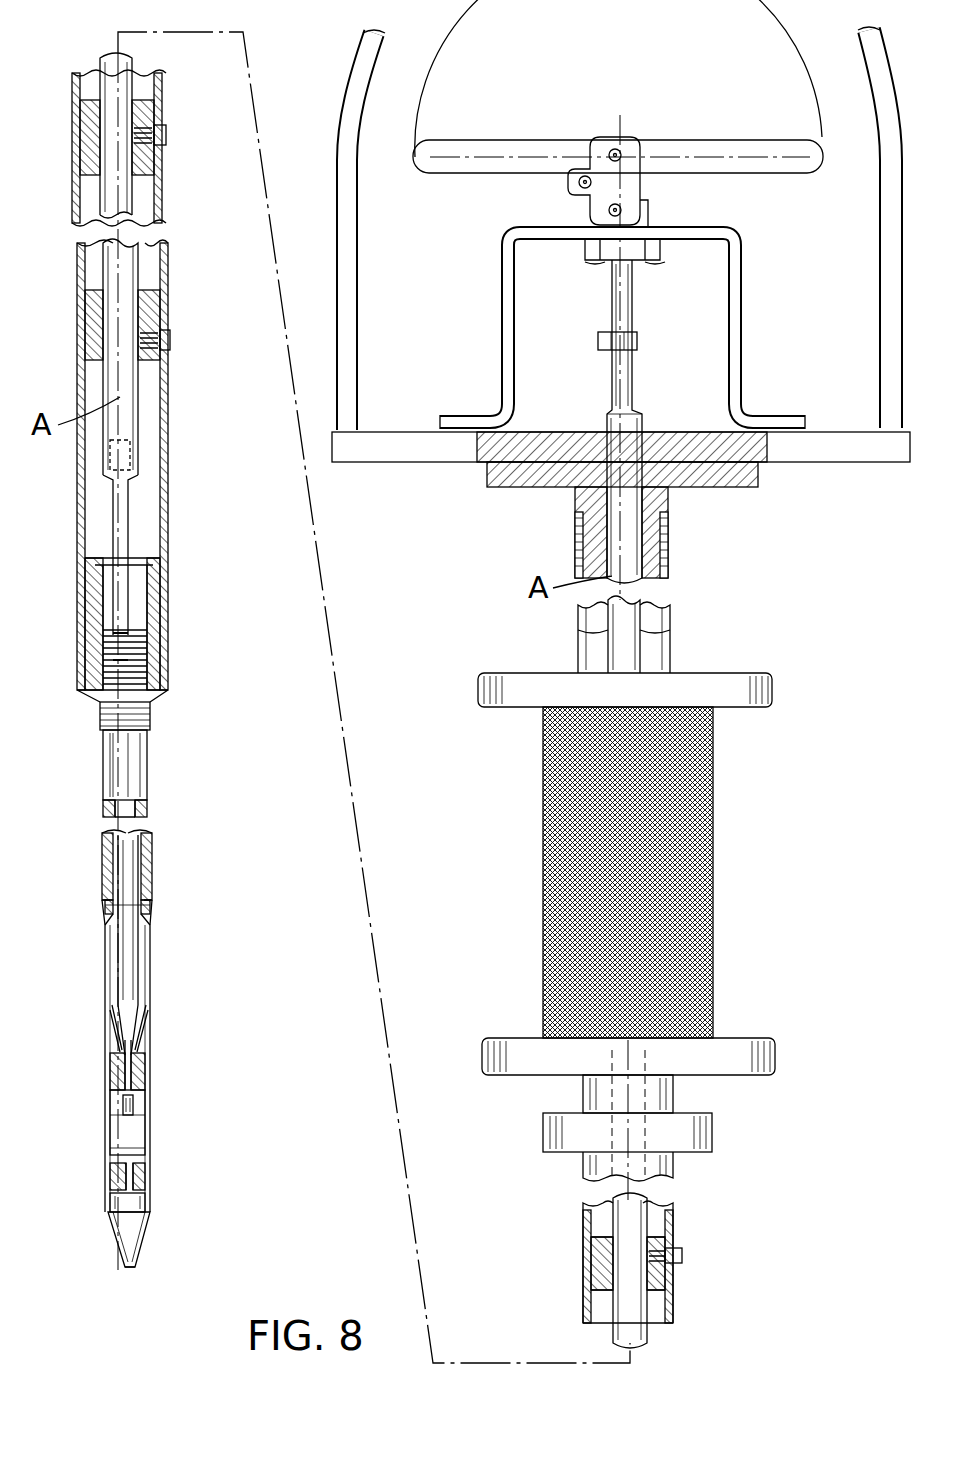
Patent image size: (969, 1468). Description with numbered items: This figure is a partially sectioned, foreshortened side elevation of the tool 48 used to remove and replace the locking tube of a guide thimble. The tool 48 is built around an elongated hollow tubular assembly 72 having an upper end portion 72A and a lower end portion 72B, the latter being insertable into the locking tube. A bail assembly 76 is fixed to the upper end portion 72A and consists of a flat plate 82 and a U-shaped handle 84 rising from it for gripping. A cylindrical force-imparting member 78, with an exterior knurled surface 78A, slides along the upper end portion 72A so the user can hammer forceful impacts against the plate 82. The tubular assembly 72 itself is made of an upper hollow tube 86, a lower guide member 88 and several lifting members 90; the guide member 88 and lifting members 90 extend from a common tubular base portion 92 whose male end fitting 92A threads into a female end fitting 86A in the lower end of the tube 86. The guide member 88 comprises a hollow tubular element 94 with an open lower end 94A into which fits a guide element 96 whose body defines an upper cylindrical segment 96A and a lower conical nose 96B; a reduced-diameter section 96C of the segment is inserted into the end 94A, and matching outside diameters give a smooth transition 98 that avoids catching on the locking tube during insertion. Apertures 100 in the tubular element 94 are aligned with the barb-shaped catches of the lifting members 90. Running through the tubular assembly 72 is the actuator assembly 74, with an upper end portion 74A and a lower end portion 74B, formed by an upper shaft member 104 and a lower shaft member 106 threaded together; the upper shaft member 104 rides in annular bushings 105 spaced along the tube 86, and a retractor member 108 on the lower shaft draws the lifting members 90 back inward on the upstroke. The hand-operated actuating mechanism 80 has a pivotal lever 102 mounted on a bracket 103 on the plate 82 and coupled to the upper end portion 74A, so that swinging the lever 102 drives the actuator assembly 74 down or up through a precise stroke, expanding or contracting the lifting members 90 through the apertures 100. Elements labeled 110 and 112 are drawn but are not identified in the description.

The tool 48 is at (800, 570).
The tubular assembly 72 is at (677, 1216).
The upper end portion of tubular assembly 72A is at (673, 537).
The lower end portion of tubular assembly 72B is at (156, 880).
The actuator assembly 74 is at (610, 1312).
The upper end portion of actuator assembly 74A is at (642, 424).
The lower end portion of actuator assembly 74B is at (140, 970).
The bail assembly 76 is at (373, 468).
The force-imparting member 78 is at (716, 912).
The knurled surface 78A is at (714, 858).
The actuating mechanism 80 is at (470, 222).
The plate 82 is at (428, 466).
The U-shaped handle 84 is at (878, 340).
The upper tube 86 is at (170, 426).
The female end fitting 86A is at (160, 618).
The lower guide member 88 is at (148, 1082).
The lifting members 90 is at (150, 1026).
The tubular base portion 92 is at (105, 882).
The male end fitting 92A is at (150, 658).
The tubular element 94 is at (148, 1132).
The open lower end of tubular element 94A is at (116, 1172).
The guide element 96 is at (150, 1226).
The upper cylindrical segment 96A is at (150, 1206).
The conical nose 96B is at (140, 1256).
The section of reduced diameter 96C is at (116, 1128).
The smooth transition 98 is at (146, 1182).
The apertures 100 is at (112, 1050).
The pivotal lever 102 is at (757, 170).
The bracket 103 is at (745, 287).
The upper shaft member 104 is at (127, 272).
The annular bushings 105 is at (148, 162).
The lower shaft member 106 is at (104, 848).
The retractor member 108 is at (108, 1118).
The retaining ring 110 is at (150, 920).
The seal 112 is at (152, 912).